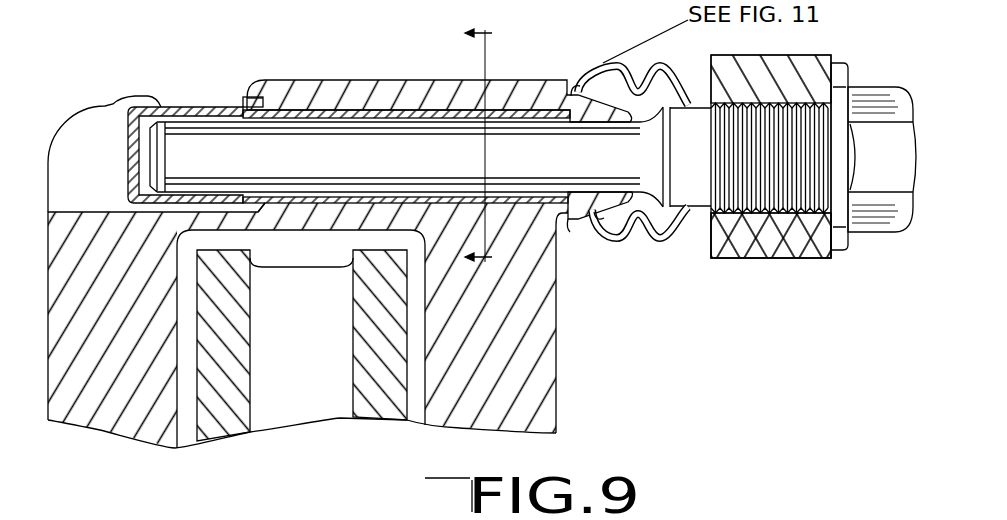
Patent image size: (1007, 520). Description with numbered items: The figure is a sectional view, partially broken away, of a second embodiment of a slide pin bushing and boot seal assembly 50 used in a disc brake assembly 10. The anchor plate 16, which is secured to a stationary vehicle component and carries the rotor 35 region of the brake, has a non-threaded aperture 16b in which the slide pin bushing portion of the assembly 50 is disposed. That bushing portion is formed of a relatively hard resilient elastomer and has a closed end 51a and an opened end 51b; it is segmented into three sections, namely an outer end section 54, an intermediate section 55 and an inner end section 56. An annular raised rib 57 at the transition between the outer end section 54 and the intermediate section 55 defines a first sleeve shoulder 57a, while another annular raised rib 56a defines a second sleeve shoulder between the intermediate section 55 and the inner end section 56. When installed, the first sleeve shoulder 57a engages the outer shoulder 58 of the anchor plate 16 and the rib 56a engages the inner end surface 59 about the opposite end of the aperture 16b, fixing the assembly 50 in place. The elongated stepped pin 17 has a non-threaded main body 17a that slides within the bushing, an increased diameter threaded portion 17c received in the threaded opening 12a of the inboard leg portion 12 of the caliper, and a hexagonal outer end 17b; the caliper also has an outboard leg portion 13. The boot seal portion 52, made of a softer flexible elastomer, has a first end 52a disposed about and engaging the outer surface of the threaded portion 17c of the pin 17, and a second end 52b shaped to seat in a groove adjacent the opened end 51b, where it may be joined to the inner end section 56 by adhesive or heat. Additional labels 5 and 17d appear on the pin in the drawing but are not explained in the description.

The bolt shaft 5 is at (439, 121).
The disc brake assembly 10 is at (466, 137).
The inboard leg portion 12 is at (771, 193).
The threaded opening 12a is at (737, 260).
The outboard leg portion 13 is at (48, 420).
The anchor plate 16 is at (422, 149).
The non-threaded aperture 16b is at (318, 108).
The pin 17 is at (873, 200).
The main body 17a is at (190, 140).
The outer end 17b is at (880, 89).
The threaded portion 17c is at (757, 258).
The shank portion 17d is at (697, 100).
The rotor 35 is at (338, 420).
The slide pin bushing and boot seal assembly 50 is at (606, 164).
The closed end 51a is at (128, 160).
The opened end 51b is at (648, 188).
The boot seal portion 52 is at (626, 247).
The first end 52a is at (672, 243).
The second end 52b is at (598, 218).
The outer end section 54 is at (116, 105).
The intermediate section 55 is at (355, 112).
The inner end section 56 is at (583, 82).
The annular raised rib 56a is at (576, 97).
The annular raised rib 57 is at (252, 104).
The first sleeve shoulder 57a is at (272, 98).
The outer shoulder 58 is at (262, 215).
The inner end surface 59 is at (584, 232).